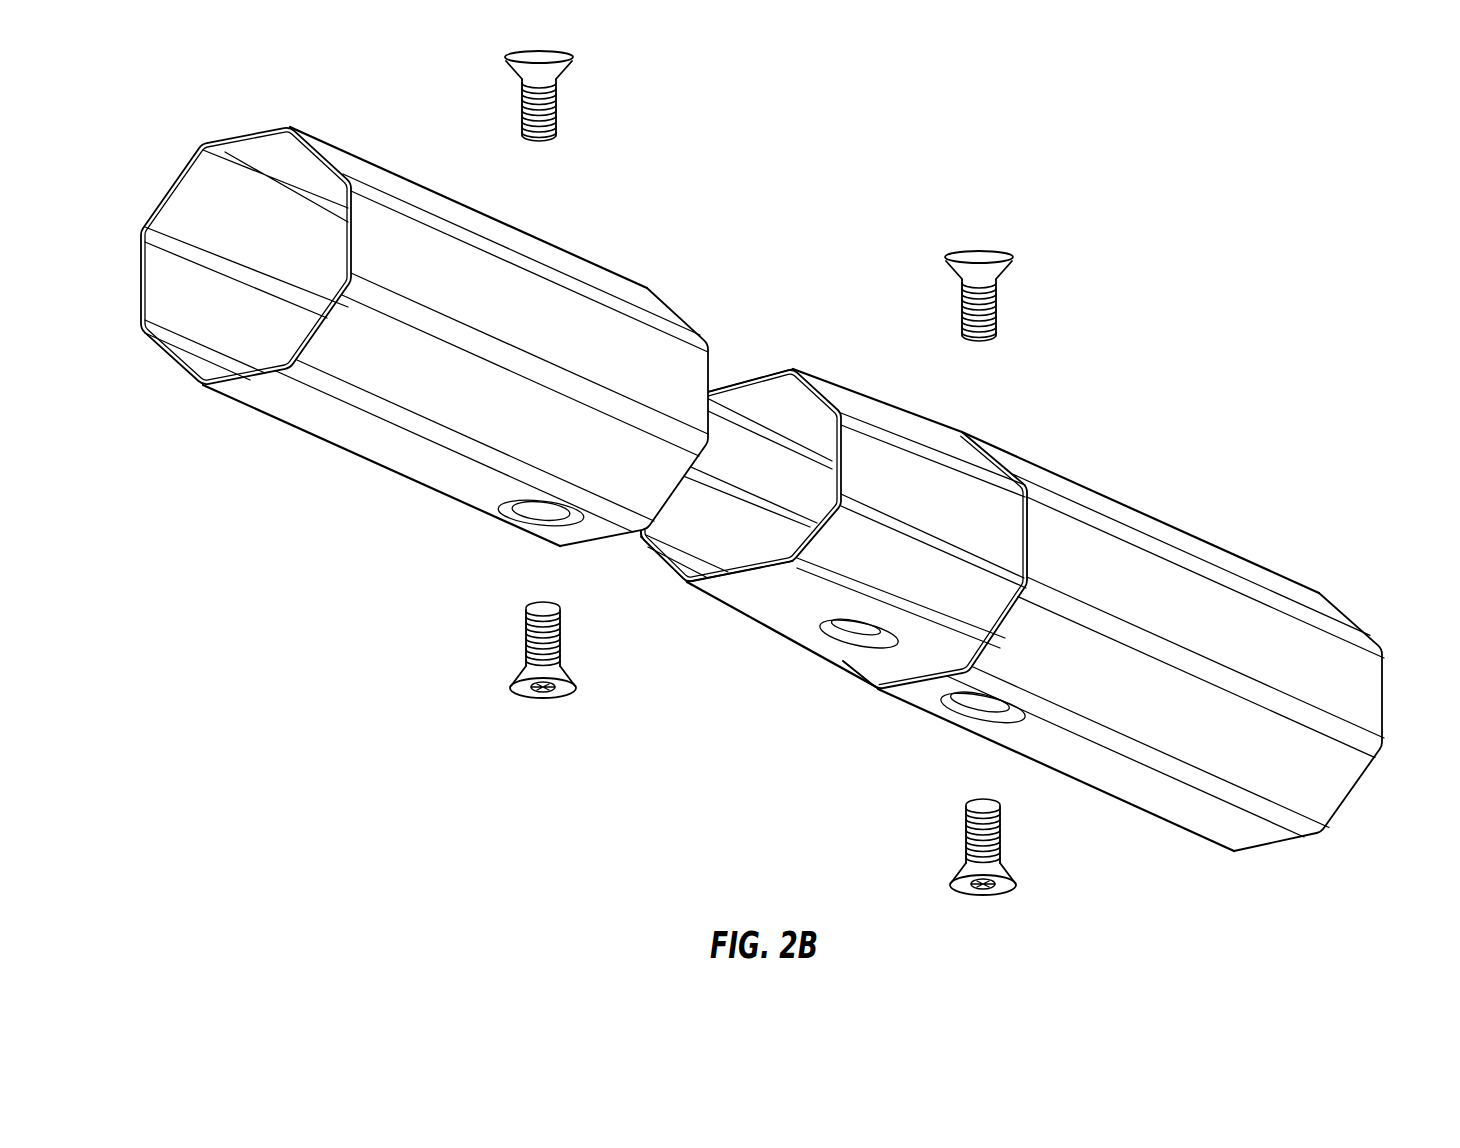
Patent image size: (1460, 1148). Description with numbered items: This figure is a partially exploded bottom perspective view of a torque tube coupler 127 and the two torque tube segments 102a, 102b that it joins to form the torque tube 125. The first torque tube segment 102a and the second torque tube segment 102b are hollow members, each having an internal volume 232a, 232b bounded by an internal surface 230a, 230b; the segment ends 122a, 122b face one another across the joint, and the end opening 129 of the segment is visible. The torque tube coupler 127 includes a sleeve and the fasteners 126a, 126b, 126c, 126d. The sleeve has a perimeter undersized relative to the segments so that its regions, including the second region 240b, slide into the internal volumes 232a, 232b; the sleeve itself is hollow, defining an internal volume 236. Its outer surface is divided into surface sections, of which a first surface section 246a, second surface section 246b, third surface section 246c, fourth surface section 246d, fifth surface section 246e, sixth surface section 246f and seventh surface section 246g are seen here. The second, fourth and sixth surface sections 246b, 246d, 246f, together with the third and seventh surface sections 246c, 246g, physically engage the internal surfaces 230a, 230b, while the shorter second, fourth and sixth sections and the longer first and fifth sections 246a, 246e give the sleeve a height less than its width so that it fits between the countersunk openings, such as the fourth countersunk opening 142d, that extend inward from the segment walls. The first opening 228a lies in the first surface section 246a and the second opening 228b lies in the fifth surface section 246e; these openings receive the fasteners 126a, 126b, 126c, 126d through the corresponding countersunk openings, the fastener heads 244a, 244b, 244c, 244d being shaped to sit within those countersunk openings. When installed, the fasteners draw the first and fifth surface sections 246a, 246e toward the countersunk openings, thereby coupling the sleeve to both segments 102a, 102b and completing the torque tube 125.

The first torque tube segment 102a is at (386, 192).
The second torque tube segment 102b is at (260, 147).
The tube end 122a is at (1347, 770).
The tube end 122b is at (323, 412).
The torque tube 125 is at (1380, 86).
The first fastener 126a is at (998, 328).
The second fastener 126b is at (965, 818).
The third fastener 126c is at (558, 132).
The fourth fastener 126d is at (525, 633).
The torque tube coupler 127 is at (1135, 223).
The tube opening 129 is at (955, 448).
The fourth countersunk opening 142d is at (517, 510).
The first opening 228a is at (815, 382).
The second opening 228b is at (862, 678).
The internal surface of first torque tube segment 230a is at (870, 690).
The internal surface of second torque tube segment 230b is at (183, 285).
The internal volume of first torque tube segment 232a is at (878, 700).
The internal volume of second torque tube segment 232b is at (203, 208).
The internal volume of the sleeve 236 is at (700, 540).
The second region 240b is at (953, 450).
The head of first fastener 244a is at (1010, 267).
The head of second fastener 244b is at (962, 880).
The head of third fastener 244c is at (572, 67).
The head of fourth fastener 244d is at (517, 690).
The first surface section 246a is at (740, 373).
The second surface section 246b is at (885, 443).
The third surface section 246c is at (908, 450).
The fourth surface section 246d is at (923, 581).
The fifth surface section 246e is at (743, 593).
The sixth surface section 246f is at (657, 540).
The seventh surface section 246g is at (640, 533).